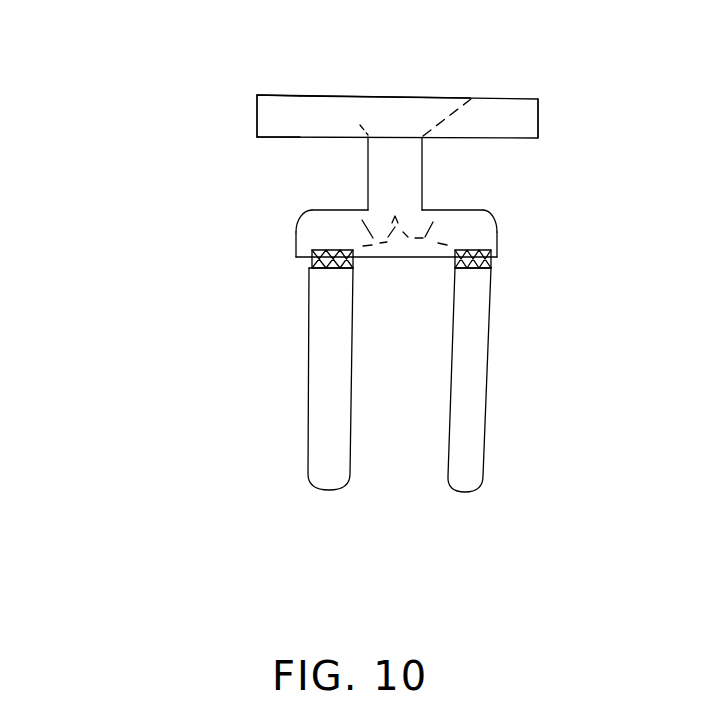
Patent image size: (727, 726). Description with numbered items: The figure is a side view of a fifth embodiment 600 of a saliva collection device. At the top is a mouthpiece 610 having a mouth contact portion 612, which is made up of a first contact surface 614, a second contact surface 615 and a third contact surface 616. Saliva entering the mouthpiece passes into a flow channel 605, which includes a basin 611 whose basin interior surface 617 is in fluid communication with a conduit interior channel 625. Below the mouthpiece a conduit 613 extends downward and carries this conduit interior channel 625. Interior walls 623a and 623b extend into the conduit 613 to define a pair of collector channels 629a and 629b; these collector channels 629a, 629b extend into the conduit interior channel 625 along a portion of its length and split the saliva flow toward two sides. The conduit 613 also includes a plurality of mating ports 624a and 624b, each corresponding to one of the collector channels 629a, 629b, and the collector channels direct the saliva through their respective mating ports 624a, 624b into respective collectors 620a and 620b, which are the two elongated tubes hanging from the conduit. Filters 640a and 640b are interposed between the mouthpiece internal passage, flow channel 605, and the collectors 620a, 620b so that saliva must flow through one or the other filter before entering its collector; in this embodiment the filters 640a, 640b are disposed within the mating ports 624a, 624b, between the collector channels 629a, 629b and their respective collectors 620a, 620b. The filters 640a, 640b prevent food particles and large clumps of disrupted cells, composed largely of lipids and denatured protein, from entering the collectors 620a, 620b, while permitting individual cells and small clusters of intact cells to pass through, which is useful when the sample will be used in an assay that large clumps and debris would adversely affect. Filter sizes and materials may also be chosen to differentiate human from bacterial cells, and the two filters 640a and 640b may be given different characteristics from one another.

The fifth embodiment 600 is at (141, 148).
The flow channel 605 is at (398, 89).
The mouthpiece 610 is at (575, 107).
The basin 611 is at (417, 112).
The mouth contact portion 612 is at (523, 97).
The conduit 613 is at (432, 162).
The first contact surface 614 is at (274, 140).
The second contact surface 615 is at (257, 113).
The third contact surface 616 is at (273, 93).
The basin interior surface 617 is at (350, 115).
The collector 620a is at (488, 389).
The collector 620b is at (305, 408).
The interior wall 623a is at (427, 238).
The interior wall 623b is at (348, 212).
The mating port 624a is at (455, 272).
The mating port 624b is at (356, 266).
The conduit interior channel 625 is at (410, 187).
The collector channel 629a is at (473, 227).
The collector channel 629b is at (296, 228).
The filter 640a is at (497, 238).
The filter 640b is at (298, 240).